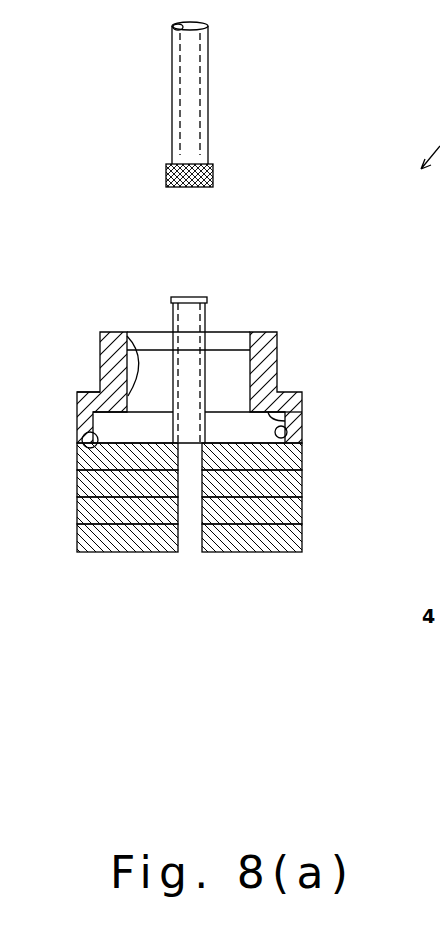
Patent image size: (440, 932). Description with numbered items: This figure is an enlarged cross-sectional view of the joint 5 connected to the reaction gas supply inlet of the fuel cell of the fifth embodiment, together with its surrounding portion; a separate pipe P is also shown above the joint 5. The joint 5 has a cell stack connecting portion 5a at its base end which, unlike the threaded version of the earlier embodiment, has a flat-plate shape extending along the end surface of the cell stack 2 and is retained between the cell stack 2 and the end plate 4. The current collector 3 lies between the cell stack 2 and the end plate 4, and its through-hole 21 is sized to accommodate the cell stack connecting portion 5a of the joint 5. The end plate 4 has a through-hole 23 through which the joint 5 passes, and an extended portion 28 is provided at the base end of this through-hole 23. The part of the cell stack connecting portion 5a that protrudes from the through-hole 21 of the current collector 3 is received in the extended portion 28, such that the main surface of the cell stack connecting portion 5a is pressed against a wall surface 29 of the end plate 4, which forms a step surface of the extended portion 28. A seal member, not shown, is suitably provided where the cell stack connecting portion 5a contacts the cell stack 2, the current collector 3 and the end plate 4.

The pipe P is at (192, 92).
The cell stack 2 is at (79, 543).
The current collector 3 is at (86, 432).
The end plate 4 is at (110, 375).
The joint 5 is at (207, 320).
The cell stack connecting portion 5a is at (80, 408).
The through-hole 21 is at (82, 452).
The through-hole 23 is at (108, 333).
The extended portion 28 is at (289, 432).
The wall surface 29 is at (288, 415).